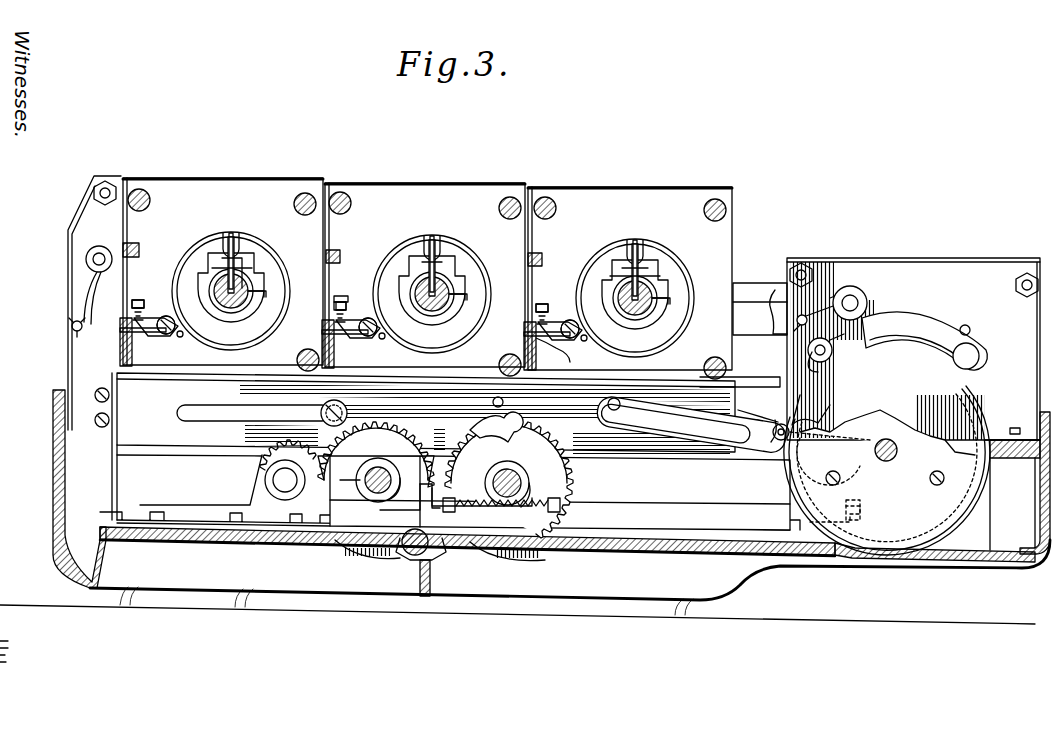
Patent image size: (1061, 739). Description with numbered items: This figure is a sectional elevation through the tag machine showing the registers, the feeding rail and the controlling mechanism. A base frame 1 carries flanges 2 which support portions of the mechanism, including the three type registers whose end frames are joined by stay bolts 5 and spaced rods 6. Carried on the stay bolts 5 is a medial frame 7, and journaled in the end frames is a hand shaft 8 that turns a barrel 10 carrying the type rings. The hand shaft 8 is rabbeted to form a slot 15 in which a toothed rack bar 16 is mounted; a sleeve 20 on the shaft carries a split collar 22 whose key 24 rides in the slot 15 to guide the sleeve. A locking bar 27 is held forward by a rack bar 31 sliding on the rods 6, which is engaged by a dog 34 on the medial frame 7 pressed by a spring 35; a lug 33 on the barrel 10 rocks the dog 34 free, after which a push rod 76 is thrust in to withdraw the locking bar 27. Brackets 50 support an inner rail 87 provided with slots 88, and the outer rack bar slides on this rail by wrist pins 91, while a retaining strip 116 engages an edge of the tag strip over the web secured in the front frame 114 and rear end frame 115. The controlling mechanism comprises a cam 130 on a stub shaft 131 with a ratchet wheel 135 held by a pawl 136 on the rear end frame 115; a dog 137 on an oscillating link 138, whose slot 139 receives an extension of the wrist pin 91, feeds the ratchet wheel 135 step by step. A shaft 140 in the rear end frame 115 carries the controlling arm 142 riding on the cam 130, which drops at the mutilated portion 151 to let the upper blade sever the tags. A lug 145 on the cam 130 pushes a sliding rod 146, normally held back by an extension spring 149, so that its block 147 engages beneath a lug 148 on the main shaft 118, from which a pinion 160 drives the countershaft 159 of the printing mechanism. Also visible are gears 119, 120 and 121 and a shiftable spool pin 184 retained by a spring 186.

The base frame 1 is at (736, 587).
The flanges 2 is at (436, 554).
The stay bolts 5 is at (140, 190).
The rods 6 is at (118, 354).
The medial frame 7 is at (190, 182).
The hand shaft 8 is at (690, 314).
The barrel 10 is at (188, 246).
The slot 15 is at (236, 262).
The rack bar 16 is at (244, 280).
The sleeve 20 is at (640, 272).
The split collar 22 is at (654, 262).
The key 24 is at (436, 272).
The locking bar 27 is at (232, 232).
The rack bar 31 is at (558, 350).
The lug 33 is at (176, 336).
The dog 34 is at (140, 310).
The spring 35 is at (340, 298).
The brackets 50 is at (117, 462).
The push rod 76 is at (134, 244).
The inner rail 87 is at (423, 446).
The slots 88 is at (680, 435).
The wrist pins 91 is at (322, 410).
The front frame 114 is at (68, 241).
The rear end frame 115 is at (991, 324).
The retaining strip 116 is at (748, 375).
The main shaft 118 is at (366, 484).
The gear 119 is at (376, 454).
The gear 120 is at (509, 478).
The gear hub 121 is at (530, 482).
The cam 130 is at (895, 392).
The stub shaft 131 is at (898, 452).
The ratchet wheel 135 is at (870, 364).
The pawl 136 is at (840, 350).
The dog 137 is at (778, 404).
The oscillating link 138 is at (776, 440).
The slot 139 is at (626, 412).
The shaft 140 is at (980, 358).
The controlling arm 142 is at (922, 322).
The lug 145 is at (866, 515).
The sliding rod 146 is at (678, 496).
The block 147 is at (438, 484).
The lug 148 is at (410, 502).
The extension spring 149 is at (501, 493).
The mutilated portion 151 is at (822, 424).
The countershaft 159 is at (283, 480).
The pinion 160 is at (264, 458).
The shiftable pin 184 is at (100, 252).
The spring 186 is at (84, 298).